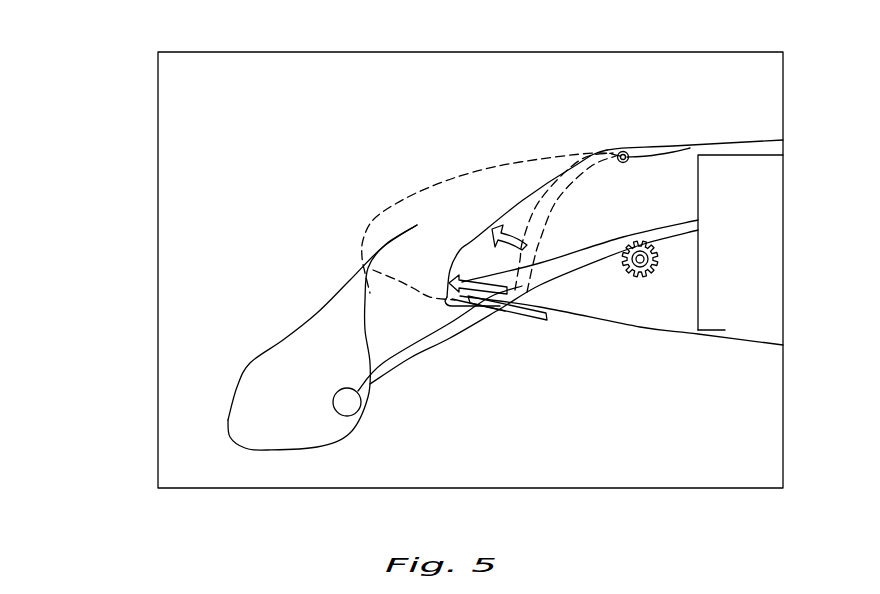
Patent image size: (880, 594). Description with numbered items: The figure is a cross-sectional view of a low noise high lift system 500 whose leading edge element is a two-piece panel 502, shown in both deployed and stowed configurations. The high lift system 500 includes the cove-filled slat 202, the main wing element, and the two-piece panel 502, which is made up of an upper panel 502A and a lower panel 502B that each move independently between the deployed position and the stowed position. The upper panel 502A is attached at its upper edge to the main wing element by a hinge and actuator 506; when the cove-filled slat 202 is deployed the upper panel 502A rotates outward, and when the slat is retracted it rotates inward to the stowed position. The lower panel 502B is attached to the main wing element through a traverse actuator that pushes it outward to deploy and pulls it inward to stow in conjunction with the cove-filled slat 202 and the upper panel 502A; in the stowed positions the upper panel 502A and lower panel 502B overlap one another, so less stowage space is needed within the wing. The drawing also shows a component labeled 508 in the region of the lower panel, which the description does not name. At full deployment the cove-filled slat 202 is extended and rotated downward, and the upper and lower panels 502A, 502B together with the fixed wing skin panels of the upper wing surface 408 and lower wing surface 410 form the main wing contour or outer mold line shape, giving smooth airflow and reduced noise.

The high lift system 500 is at (139, 104).
The cove-filled slat 202 is at (264, 363).
The two-piece panel 502 is at (420, 120).
The upper panel 502A is at (465, 227).
The lower panel 502B is at (452, 289).
The hinge and actuator 506 is at (700, 136).
The upper wing surface 408 is at (728, 147).
The lower wing surface 410 is at (556, 322).
The rail 508 is at (523, 317).